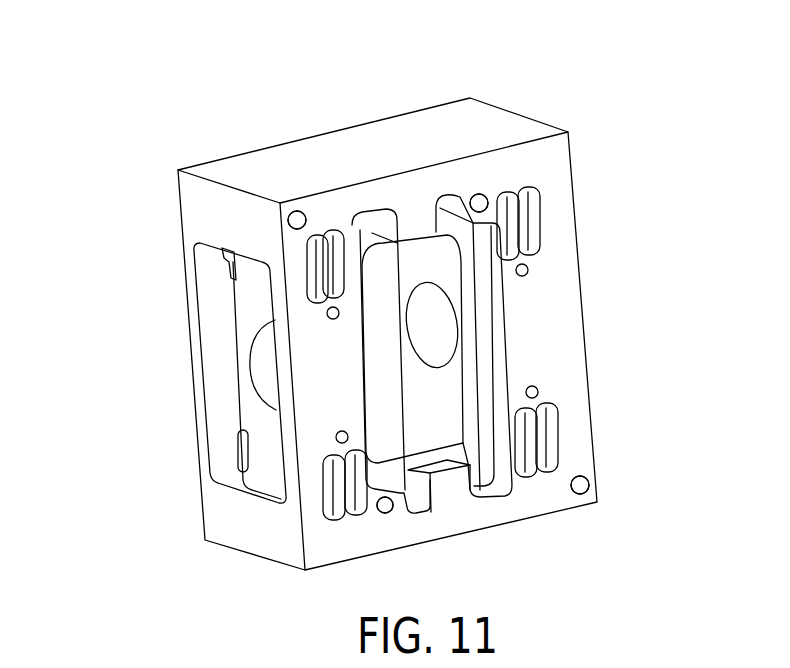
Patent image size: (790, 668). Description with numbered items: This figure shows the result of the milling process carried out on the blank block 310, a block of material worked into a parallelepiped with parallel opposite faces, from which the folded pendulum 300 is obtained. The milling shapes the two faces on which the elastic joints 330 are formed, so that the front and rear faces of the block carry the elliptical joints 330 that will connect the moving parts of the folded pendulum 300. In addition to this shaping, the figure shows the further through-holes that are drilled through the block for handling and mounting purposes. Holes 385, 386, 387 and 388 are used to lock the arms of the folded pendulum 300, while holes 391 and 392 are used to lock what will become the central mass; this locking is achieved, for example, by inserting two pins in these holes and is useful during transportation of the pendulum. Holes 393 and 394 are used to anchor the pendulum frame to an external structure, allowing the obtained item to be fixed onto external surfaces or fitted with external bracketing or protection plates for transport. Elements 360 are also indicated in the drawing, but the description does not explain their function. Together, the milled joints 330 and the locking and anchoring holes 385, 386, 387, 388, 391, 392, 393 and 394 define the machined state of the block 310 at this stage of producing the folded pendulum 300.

The folded pendulum 300 is at (160, 152).
The blank block 310 is at (395, 128).
The joints 330 is at (482, 248).
The spring 360 is at (338, 236).
The hole 385 is at (327, 316).
The hole 386 is at (336, 440).
The hole 387 is at (530, 270).
The hole 388 is at (540, 390).
The hole 391 is at (484, 194).
The hole 392 is at (391, 512).
The hole 393 is at (588, 482).
The hole 394 is at (294, 210).